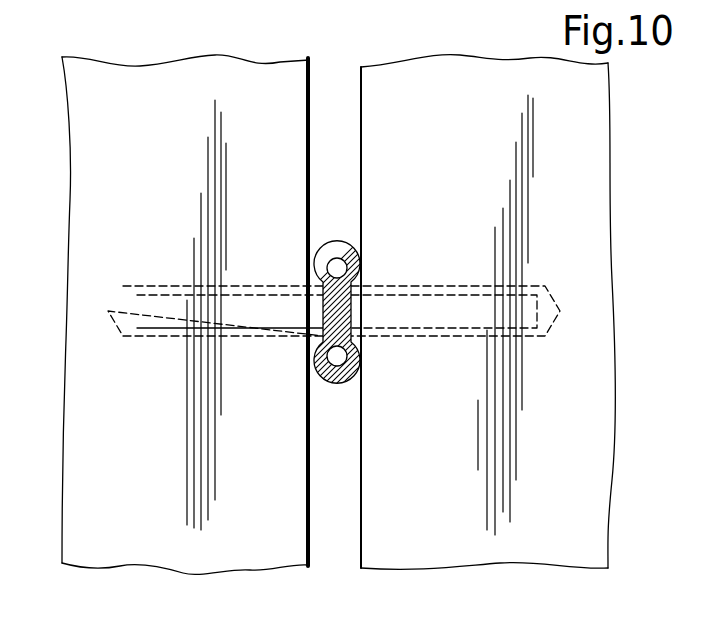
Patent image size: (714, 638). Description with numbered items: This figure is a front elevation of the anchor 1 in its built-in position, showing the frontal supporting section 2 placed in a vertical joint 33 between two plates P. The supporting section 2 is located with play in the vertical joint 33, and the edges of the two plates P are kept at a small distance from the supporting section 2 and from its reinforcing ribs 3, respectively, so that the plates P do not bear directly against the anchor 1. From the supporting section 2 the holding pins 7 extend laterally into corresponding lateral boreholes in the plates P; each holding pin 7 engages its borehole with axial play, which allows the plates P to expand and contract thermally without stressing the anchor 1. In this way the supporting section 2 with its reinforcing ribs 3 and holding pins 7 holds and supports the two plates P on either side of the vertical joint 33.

The anchor 1 is at (349, 238).
The supporting section 2 is at (352, 333).
The reinforcing ribs 3 is at (320, 267).
The holding pin 7 is at (153, 315).
The vertical joint 33 is at (352, 510).
The plate P is at (117, 102).